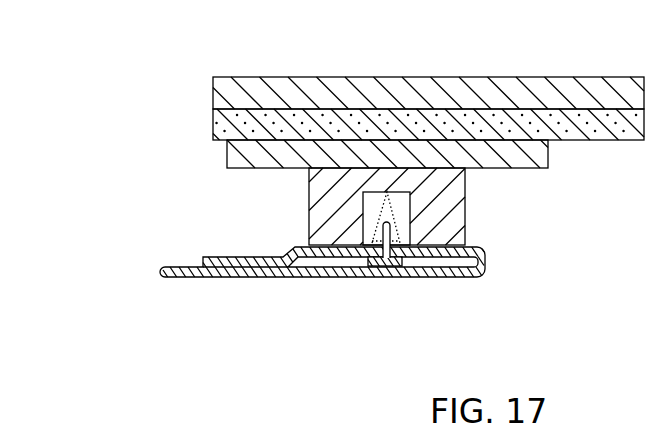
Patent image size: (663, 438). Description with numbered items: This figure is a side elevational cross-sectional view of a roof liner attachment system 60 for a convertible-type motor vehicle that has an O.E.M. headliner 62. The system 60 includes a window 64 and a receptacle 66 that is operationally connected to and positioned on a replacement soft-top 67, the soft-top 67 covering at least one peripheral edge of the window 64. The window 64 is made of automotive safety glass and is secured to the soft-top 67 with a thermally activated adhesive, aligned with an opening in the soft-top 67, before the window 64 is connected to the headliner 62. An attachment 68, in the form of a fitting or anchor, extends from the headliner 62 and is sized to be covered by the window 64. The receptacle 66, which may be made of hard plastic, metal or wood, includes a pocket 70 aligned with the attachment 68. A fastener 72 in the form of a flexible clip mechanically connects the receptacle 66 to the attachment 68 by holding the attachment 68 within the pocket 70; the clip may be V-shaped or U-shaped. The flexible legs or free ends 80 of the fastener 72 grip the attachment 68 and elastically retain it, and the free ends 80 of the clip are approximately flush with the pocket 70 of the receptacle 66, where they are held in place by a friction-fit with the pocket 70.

The roof liner attachment system 60 is at (150, 198).
The O.E.M. headliner 62 is at (484, 263).
The window 64 is at (568, 140).
The receptacle 66 is at (465, 213).
The replacement soft-top 67 is at (522, 77).
The attachment 68 is at (380, 260).
The pocket 70 is at (363, 224).
The fastener 72 is at (363, 215).
The free ends 80 is at (391, 230).